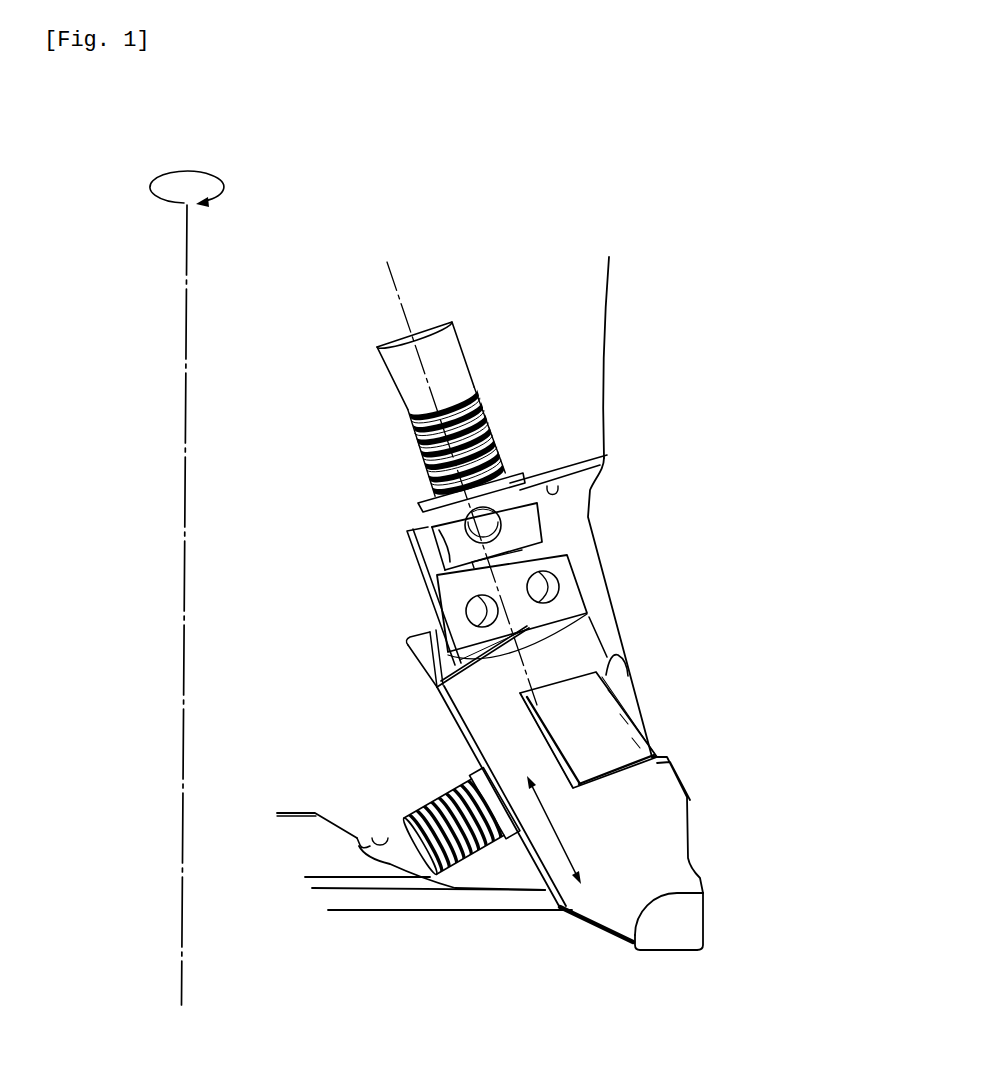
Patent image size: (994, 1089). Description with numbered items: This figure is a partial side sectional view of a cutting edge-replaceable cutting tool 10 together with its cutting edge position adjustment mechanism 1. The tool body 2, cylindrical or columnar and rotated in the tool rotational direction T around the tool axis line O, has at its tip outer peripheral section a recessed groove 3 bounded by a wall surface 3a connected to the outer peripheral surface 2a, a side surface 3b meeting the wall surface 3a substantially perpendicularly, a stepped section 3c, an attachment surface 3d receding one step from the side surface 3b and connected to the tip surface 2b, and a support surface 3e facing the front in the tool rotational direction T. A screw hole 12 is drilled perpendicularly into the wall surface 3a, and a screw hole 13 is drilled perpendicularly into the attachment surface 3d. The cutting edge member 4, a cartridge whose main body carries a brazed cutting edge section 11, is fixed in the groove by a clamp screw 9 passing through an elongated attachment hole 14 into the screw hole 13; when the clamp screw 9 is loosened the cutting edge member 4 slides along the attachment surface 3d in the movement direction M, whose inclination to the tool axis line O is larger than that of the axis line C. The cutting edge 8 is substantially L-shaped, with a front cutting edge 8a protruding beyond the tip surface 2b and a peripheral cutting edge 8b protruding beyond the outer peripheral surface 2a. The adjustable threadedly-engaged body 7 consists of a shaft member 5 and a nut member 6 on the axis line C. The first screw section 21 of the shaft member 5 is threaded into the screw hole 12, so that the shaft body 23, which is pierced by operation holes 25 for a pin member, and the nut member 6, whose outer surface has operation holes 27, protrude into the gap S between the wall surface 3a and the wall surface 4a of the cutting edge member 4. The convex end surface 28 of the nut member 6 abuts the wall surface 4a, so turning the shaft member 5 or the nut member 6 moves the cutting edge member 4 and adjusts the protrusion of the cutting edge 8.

The cutting edge position adjustment mechanism 1 is at (745, 472).
The tool body 2 is at (612, 345).
The outer peripheral surface 2a is at (608, 400).
The tip surface 2b is at (500, 890).
The recessed groove 3 is at (516, 573).
The wall surface 3a is at (553, 482).
The side surface 3b is at (412, 547).
The stepped section 3c is at (407, 644).
The attachment surface 3d is at (458, 717).
The support surface 3e is at (600, 635).
The cutting edge member 4 is at (586, 826).
The wall surface 4a is at (458, 658).
The shaft member 5 is at (568, 525).
The nut member 6 is at (545, 600).
The adjustable threadedly-engaged body 7 is at (562, 570).
The cutting edge 8 is at (725, 948).
The front cutting edge 8a is at (673, 950).
The peripheral cutting edge 8b is at (706, 935).
The clamp screw 9 is at (612, 733).
The cutting edge-replaceable cutting tool 10 is at (660, 132).
The cutting edge section 11 is at (712, 905).
The screw hole 12 is at (417, 420).
The screw hole 13 is at (378, 835).
The attachment hole 14 is at (526, 702).
The first screw section 21 is at (420, 440).
The shaft body 23 is at (440, 522).
The operation hole 25 is at (505, 517).
The operation hole 27 is at (550, 587).
The end surface 28 is at (488, 654).
The axis line C is at (462, 466).
The movement direction M is at (560, 836).
The tool axis line O is at (189, 312).
The gap S is at (423, 583).
The tool rotational direction T is at (197, 189).